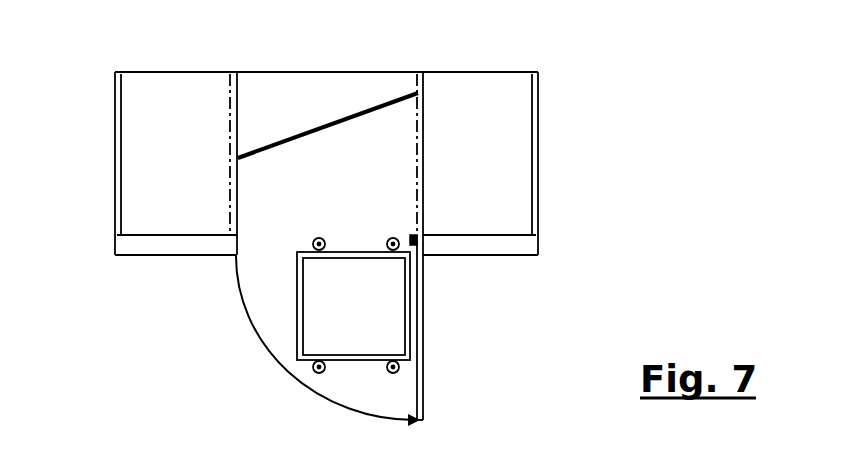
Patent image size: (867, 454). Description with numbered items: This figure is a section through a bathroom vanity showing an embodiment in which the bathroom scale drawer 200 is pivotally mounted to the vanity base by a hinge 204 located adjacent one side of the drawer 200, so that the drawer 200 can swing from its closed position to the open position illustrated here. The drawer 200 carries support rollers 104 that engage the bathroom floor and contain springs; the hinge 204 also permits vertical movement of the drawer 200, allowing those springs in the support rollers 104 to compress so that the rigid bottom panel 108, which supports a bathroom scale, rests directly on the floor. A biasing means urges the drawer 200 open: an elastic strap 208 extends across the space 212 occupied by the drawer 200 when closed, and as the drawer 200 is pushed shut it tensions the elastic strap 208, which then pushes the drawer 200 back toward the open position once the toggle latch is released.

The support rollers 104 is at (389, 236).
The rigid bottom panel 108 is at (377, 317).
The bathroom scale drawer 200 is at (435, 338).
The hinge 204 is at (417, 238).
The elastic strap 208 is at (288, 133).
The space 212 is at (389, 162).